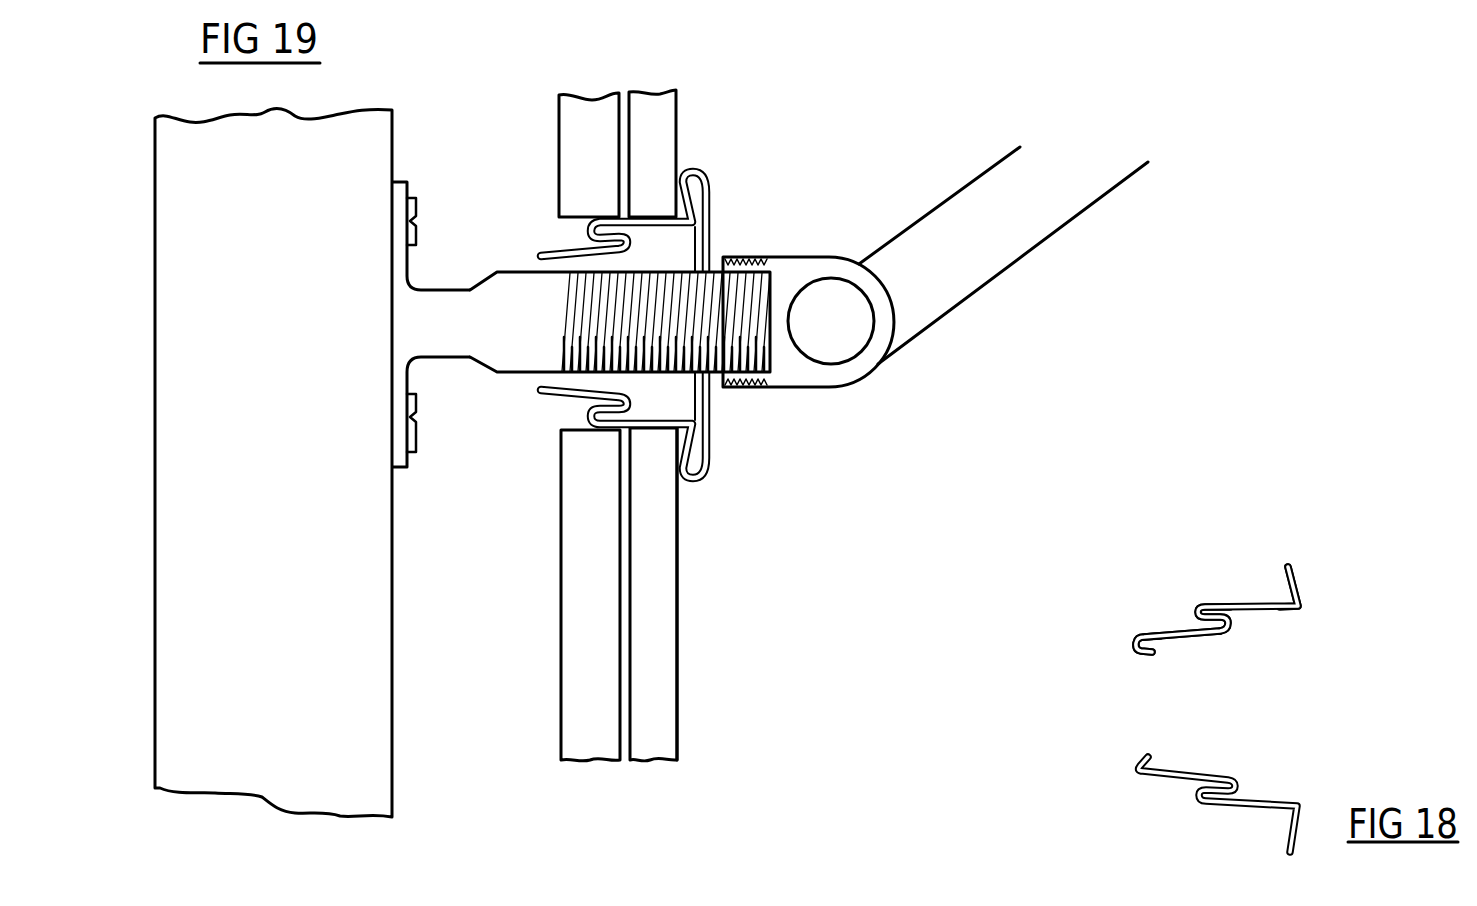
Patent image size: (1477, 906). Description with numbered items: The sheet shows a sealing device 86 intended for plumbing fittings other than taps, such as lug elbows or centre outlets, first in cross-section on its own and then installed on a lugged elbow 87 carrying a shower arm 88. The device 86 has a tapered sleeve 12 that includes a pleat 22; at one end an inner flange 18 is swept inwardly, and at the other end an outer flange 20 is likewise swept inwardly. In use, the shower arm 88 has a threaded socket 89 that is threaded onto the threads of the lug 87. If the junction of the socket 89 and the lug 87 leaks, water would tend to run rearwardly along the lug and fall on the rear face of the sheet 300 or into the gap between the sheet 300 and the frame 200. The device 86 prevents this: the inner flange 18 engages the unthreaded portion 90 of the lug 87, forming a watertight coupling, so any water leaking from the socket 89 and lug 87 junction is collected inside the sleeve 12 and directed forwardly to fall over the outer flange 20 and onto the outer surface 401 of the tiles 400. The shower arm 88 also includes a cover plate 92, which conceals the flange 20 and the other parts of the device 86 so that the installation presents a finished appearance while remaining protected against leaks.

In FIG. 19, the frame 200 is at (353, 147).
In FIG. 19, the lugged elbow 87 is at (479, 270).
In FIG. 19, the unthreaded portion 90 is at (512, 373).
In FIG. 19, the cover plate 92 is at (707, 177).
In FIG. 19, the threaded socket 89 is at (814, 255).
In FIG. 19, the shower arm 88 is at (1025, 293).
In FIG. 19, the sheet 300 is at (580, 658).
In FIG. 19, the tiles 400 is at (652, 663).
In FIG. 19, the outer surface 401 is at (677, 592).
In FIG. 18, the device 86 is at (1068, 594).
In FIG. 18, the sleeve 12 is at (1163, 632).
In FIG. 18, the pleat 22 is at (1205, 608).
In FIG. 18, the outer flange 20 is at (1297, 587).
In FIG. 18, the inner flange 18 is at (1140, 648).